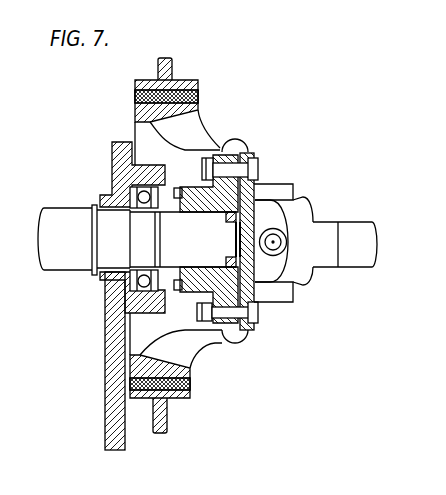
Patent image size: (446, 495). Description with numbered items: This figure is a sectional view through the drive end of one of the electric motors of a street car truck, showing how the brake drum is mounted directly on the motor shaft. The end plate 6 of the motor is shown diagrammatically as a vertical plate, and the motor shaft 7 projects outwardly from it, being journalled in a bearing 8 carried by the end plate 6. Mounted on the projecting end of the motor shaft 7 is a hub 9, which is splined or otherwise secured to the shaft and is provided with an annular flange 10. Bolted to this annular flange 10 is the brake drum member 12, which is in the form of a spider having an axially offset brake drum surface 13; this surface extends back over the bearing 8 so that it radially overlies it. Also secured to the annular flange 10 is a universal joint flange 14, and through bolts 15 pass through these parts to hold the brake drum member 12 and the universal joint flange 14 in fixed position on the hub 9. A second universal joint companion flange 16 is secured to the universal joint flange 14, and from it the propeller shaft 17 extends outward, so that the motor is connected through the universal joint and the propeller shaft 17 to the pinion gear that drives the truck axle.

The end plate 6 is at (110, 387).
The motor shaft 7 is at (72, 220).
The bearing 8 is at (133, 183).
The hub 9 is at (225, 161).
The annular flange 10 is at (233, 154).
The brake drum member 12 is at (203, 128).
The brake drum surface 13 is at (132, 122).
The universal joint flange 14 is at (268, 183).
The through bolts 15 is at (250, 157).
The universal joint companion flange 16 is at (308, 222).
The propeller shaft 17 is at (366, 262).